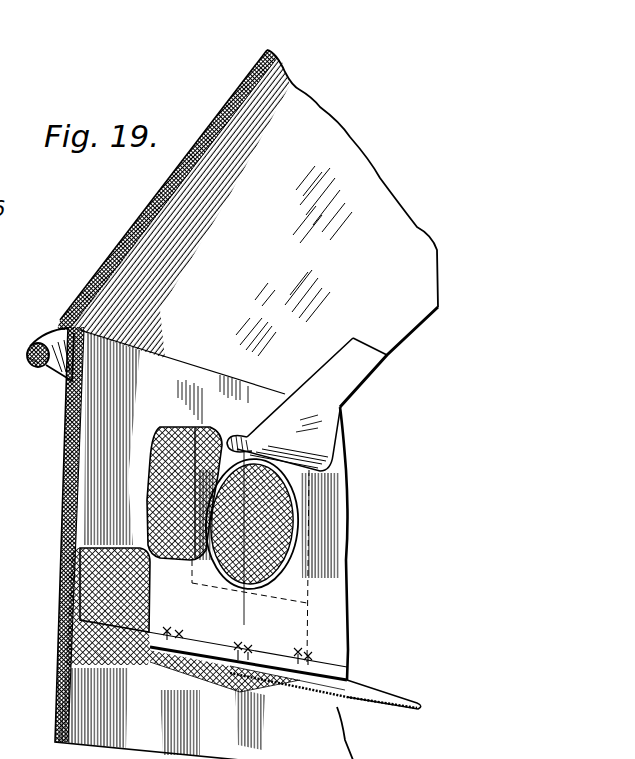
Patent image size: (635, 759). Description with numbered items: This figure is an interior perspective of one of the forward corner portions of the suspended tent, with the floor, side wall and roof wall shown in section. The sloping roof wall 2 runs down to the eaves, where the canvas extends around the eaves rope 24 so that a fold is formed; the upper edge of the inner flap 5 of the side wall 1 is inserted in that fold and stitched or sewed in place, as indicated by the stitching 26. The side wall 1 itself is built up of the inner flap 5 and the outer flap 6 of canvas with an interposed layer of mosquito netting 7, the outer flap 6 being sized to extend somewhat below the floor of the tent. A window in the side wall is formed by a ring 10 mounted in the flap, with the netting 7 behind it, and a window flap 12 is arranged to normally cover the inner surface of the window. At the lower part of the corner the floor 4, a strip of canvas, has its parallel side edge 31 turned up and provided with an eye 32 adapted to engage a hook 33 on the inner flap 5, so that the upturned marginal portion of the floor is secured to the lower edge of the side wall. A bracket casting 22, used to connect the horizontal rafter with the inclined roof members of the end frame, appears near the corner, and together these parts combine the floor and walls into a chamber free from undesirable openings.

The side wall 1 is at (66, 492).
The sloping roof wall 2 is at (140, 229).
The floor 4 is at (291, 689).
The inner flap 5 is at (60, 680).
The outer flap 6 is at (150, 589).
The layer of mosquito netting 7 is at (102, 655).
The ring 10 is at (282, 543).
The window flap 12 is at (330, 432).
The bracket casting 22 is at (248, 428).
The eaves rope 24 is at (36, 362).
The stitching 26 is at (60, 330).
The side edge of floor 31 is at (243, 617).
The eye 32 is at (176, 650).
The hook 33 is at (165, 629).